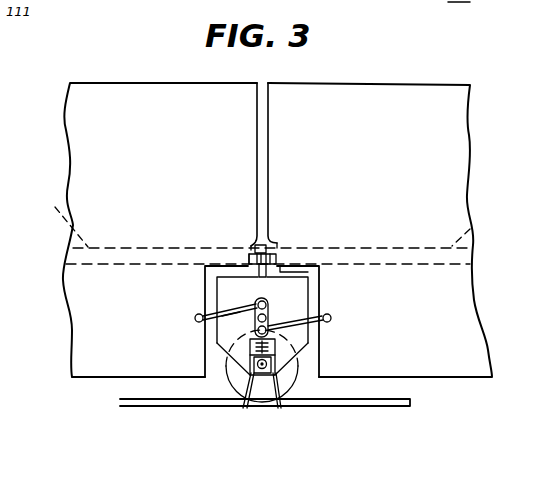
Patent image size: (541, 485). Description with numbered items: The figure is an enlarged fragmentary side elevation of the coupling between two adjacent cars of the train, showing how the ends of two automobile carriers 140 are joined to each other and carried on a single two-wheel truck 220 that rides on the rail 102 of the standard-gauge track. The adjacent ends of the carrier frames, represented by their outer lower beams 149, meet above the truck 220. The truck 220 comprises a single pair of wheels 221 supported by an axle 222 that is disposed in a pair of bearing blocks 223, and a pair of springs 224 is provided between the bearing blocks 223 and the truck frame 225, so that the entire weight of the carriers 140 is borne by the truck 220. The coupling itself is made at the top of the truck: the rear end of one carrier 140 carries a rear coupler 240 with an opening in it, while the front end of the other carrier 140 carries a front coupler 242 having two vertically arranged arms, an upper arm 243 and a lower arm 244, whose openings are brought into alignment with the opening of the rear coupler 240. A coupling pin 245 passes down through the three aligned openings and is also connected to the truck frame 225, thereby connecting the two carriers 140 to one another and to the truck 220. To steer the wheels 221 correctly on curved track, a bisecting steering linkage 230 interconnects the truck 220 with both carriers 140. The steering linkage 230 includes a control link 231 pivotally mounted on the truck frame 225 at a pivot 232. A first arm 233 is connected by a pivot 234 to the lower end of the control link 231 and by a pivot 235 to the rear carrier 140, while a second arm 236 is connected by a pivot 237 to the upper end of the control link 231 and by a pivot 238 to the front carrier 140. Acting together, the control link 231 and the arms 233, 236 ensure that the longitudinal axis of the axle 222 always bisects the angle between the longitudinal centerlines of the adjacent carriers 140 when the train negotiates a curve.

The rail 102 is at (404, 399).
The automobile carrier 140 is at (125, 103).
The outer lower beam 149 is at (485, 216).
The two-wheel truck 220 is at (223, 352).
The wheels 221 is at (288, 374).
The axle 222 is at (270, 378).
The bearing blocks 223 is at (247, 400).
The springs 224 is at (280, 350).
The truck frame 225 is at (300, 293).
The steering linkage 230 is at (236, 291).
The control link 231 is at (268, 300).
The pivot 232 is at (270, 310).
The first arm 233 is at (272, 328).
The pivot 234 is at (230, 320).
The pivot 235 is at (331, 318).
The second arm 236 is at (222, 311).
The pivot 237 is at (258, 300).
The pivot 238 is at (195, 319).
The rear coupler 240 is at (248, 256).
The front coupler 242 is at (273, 240).
The upper arm 243 is at (252, 252).
The lower arm 244 is at (276, 258).
The coupling pin 245 is at (257, 244).